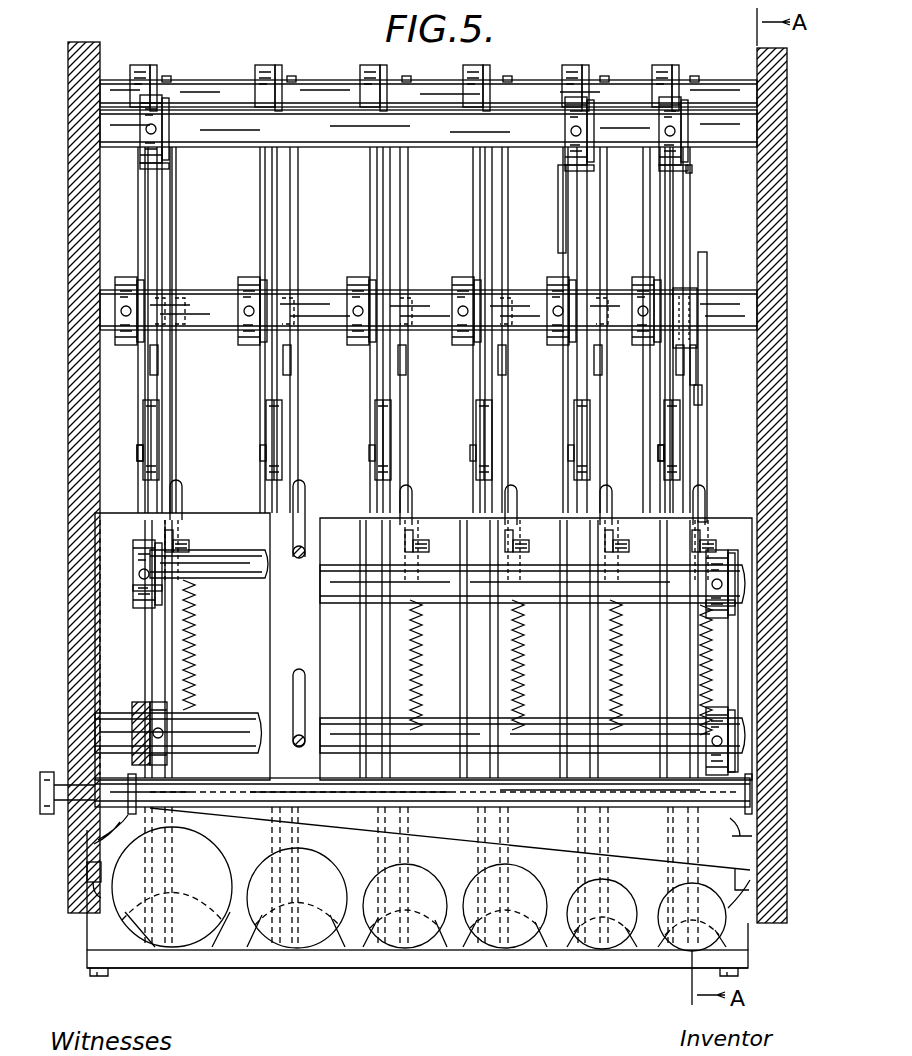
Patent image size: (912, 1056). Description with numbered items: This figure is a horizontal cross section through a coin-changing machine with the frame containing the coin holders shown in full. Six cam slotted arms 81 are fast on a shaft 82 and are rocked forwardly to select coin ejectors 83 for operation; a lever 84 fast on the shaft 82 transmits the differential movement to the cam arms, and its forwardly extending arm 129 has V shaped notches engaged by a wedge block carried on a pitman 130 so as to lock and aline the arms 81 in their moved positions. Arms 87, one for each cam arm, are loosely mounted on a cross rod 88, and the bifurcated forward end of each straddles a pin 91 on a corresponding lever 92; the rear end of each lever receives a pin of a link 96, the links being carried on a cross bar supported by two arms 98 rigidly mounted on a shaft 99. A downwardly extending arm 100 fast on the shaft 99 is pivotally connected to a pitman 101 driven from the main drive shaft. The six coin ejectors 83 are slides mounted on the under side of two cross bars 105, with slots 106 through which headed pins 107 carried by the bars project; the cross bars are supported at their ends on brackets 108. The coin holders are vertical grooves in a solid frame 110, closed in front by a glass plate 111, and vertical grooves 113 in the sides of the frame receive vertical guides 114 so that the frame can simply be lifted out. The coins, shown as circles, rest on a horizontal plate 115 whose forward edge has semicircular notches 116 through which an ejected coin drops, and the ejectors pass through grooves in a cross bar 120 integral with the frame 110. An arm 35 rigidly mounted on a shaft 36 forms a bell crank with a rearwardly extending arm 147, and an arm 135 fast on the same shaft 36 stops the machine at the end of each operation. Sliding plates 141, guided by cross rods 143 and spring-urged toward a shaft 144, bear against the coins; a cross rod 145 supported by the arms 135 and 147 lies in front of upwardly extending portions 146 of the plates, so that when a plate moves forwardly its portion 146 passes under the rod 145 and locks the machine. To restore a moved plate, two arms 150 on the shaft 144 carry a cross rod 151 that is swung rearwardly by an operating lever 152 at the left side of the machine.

The arm 35 is at (132, 711).
The shaft 36 is at (230, 730).
The cam slotted arms 81 is at (262, 206).
The shaft 82 is at (745, 330).
The coin ejectors 83 is at (168, 400).
The lever 84 is at (706, 270).
The arms 87 is at (160, 420).
The cross rod 88 is at (744, 92).
The pin 91 is at (137, 452).
The levers 92 is at (150, 366).
The links 96 is at (172, 242).
The arms 98 is at (171, 152).
The shaft 99 is at (744, 150).
The arm 100 is at (566, 158).
The pitman 101 is at (558, 218).
The cross bars 105 is at (129, 516).
The slots 106 is at (182, 490).
The headed pins 107 is at (306, 550).
The frames or brackets 108 is at (80, 646).
The frame 110 is at (750, 951).
The glass plate 111 is at (300, 968).
The vertical grooves 113 is at (742, 840).
The vertical guides 114 is at (100, 896).
The horizontal plate 115 is at (608, 920).
The semicircular notches 116 is at (542, 945).
The cross bar 120 is at (563, 796).
The arm 129 is at (700, 405).
The pitman 130 is at (690, 384).
The arm 135 is at (733, 550).
The sliding plates 141 is at (196, 646).
The cross rods 143 is at (345, 600).
The shaft 144 is at (232, 760).
The cross rod 145 is at (574, 564).
The upwardly extending portions 146 is at (190, 540).
The arm 147 is at (136, 642).
The arms 150 is at (130, 778).
The cross rod 151 is at (378, 836).
The operating lever 152 is at (47, 770).